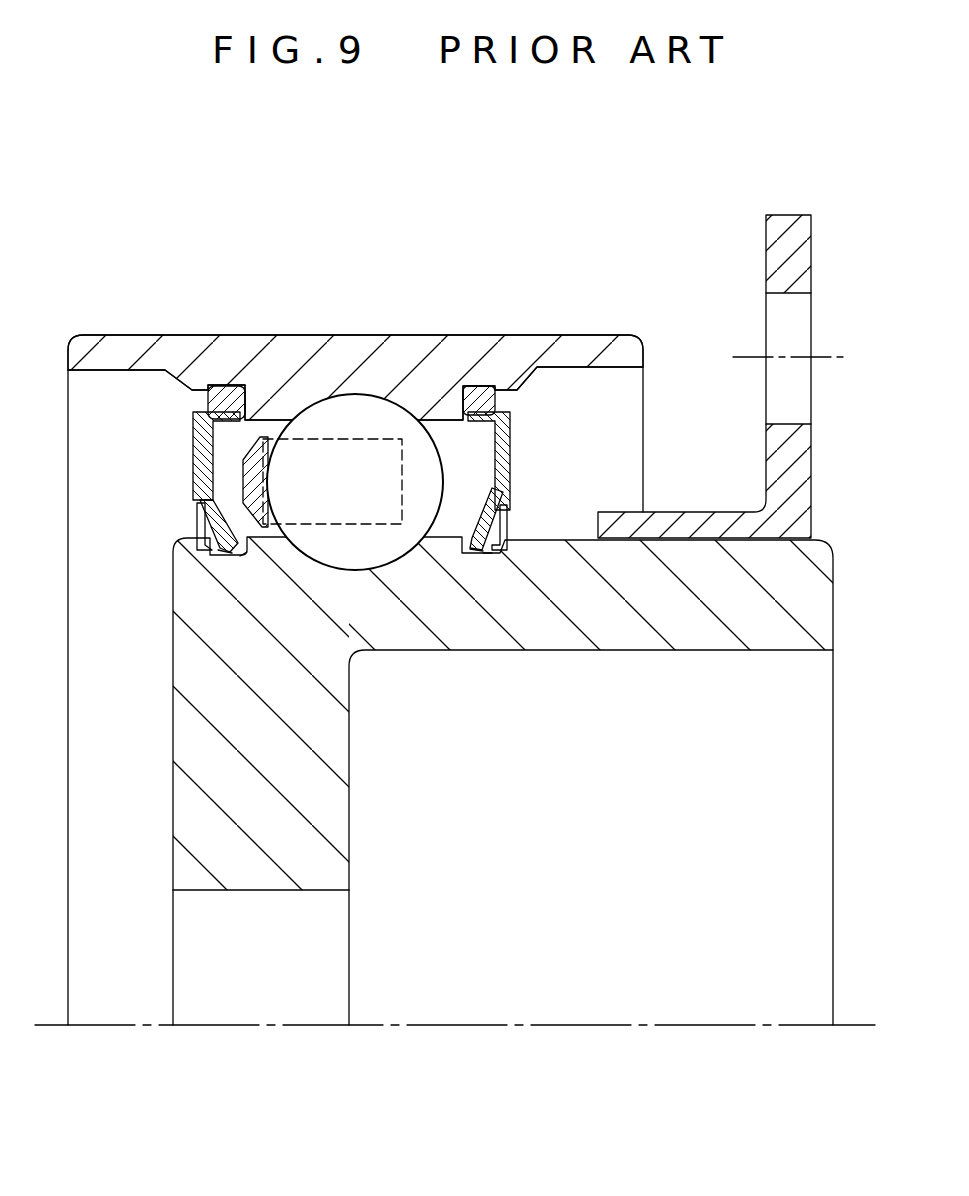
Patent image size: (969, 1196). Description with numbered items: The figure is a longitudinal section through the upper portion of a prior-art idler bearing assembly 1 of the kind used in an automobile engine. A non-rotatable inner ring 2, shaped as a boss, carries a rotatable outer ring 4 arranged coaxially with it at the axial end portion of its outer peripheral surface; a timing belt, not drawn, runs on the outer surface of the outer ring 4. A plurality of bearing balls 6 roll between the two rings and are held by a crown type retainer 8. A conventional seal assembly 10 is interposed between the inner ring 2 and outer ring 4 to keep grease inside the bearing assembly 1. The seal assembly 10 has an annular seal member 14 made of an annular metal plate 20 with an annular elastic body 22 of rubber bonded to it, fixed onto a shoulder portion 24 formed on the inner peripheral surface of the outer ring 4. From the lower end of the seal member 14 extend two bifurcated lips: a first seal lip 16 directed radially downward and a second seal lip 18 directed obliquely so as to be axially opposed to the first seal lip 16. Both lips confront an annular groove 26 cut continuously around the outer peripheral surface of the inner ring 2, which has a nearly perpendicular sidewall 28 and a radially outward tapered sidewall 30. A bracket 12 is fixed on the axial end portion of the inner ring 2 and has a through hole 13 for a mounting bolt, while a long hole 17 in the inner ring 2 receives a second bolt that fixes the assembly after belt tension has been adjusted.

The idler bearing assembly 1 is at (521, 263).
The inner ring 2 is at (186, 670).
The outer ring 4 is at (243, 345).
The bearing balls 6 is at (360, 408).
The crown type retainer 8 is at (258, 435).
The seal assembly 10 is at (112, 410).
The bracket 12 is at (805, 449).
The through hole 13 is at (787, 295).
The annular seal member 14 is at (183, 497).
The first seal lip 16 is at (197, 520).
The long hole 17 is at (244, 890).
The second seal lip 18 is at (222, 527).
The annular metal plate 20 is at (498, 438).
The annular elastic body 22 is at (513, 416).
The shoulder portion 24 is at (218, 388).
The annular groove 26 is at (485, 553).
The perpendicular sidewall 28 is at (245, 557).
The tapered sidewall 30 is at (220, 553).